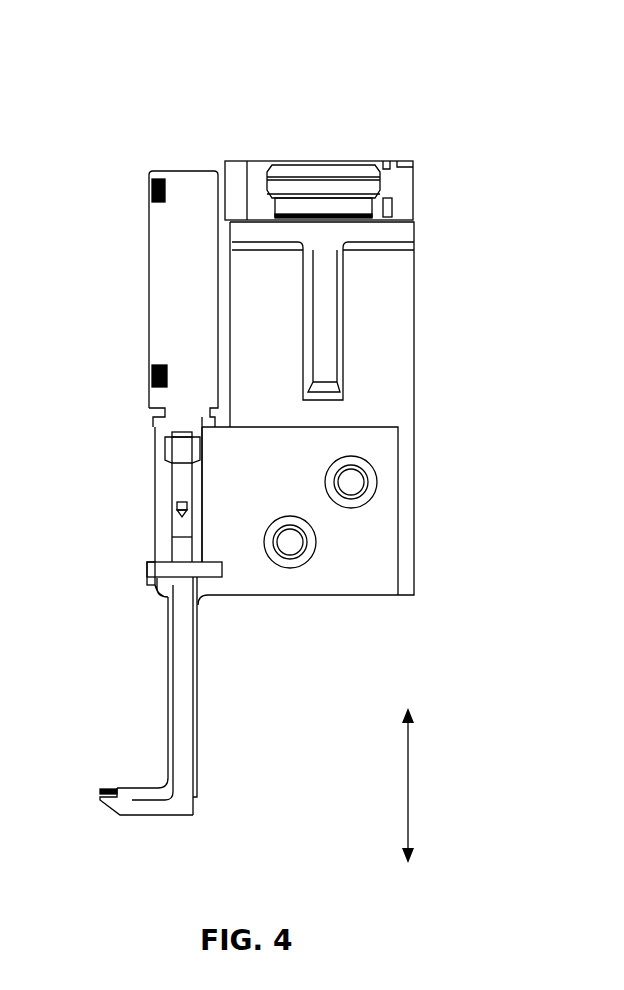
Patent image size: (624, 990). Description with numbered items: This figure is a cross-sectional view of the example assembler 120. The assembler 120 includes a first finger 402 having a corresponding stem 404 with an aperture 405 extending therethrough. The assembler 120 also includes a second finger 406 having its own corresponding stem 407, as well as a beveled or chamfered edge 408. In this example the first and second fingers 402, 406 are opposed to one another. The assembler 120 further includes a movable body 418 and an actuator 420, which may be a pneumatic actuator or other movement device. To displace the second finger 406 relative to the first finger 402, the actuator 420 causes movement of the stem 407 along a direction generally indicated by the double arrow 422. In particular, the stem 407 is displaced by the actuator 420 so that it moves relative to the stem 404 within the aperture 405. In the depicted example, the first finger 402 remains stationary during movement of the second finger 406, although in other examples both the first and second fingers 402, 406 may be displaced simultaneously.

The assembler 120 is at (450, 104).
The movable body 418 is at (402, 375).
The actuator 420 is at (162, 280).
The aperture 405 is at (172, 622).
The stem 404 is at (168, 693).
The stem 407 is at (185, 700).
The first finger 402 is at (140, 787).
The beveled or chamfered edge 408 is at (123, 813).
The second finger 406 is at (167, 813).
The double arrow 422 is at (408, 778).